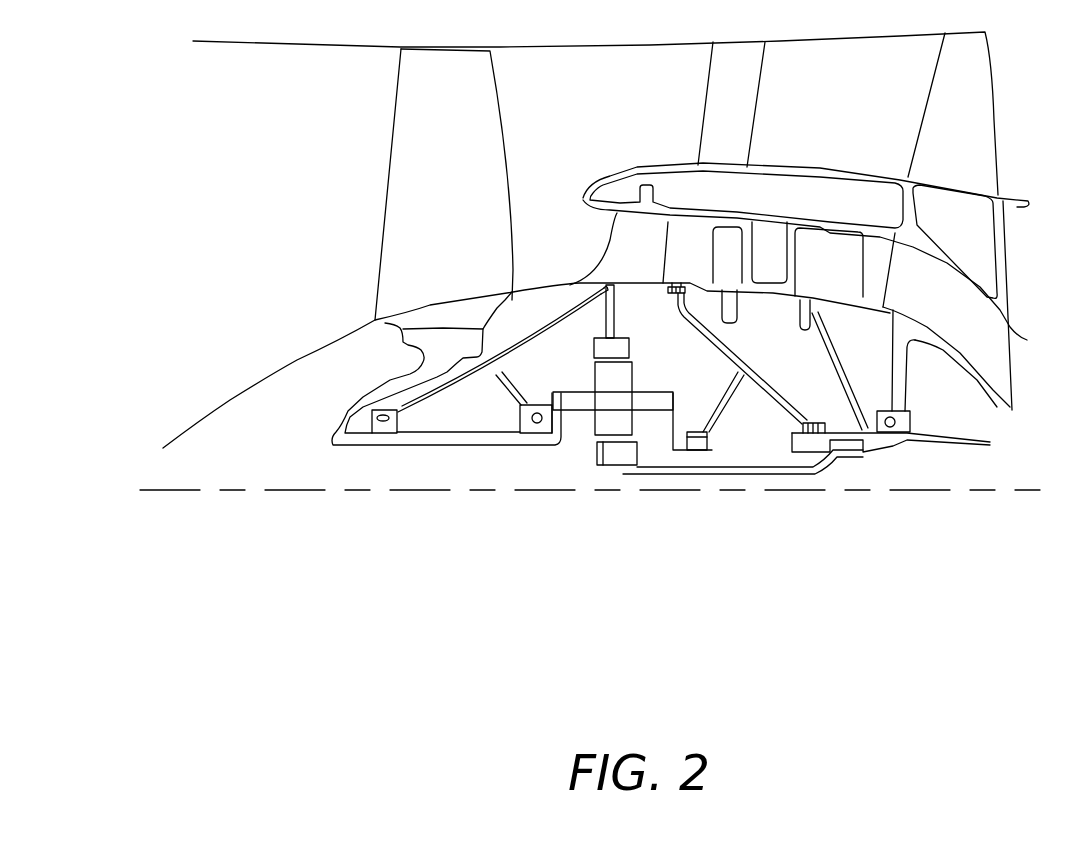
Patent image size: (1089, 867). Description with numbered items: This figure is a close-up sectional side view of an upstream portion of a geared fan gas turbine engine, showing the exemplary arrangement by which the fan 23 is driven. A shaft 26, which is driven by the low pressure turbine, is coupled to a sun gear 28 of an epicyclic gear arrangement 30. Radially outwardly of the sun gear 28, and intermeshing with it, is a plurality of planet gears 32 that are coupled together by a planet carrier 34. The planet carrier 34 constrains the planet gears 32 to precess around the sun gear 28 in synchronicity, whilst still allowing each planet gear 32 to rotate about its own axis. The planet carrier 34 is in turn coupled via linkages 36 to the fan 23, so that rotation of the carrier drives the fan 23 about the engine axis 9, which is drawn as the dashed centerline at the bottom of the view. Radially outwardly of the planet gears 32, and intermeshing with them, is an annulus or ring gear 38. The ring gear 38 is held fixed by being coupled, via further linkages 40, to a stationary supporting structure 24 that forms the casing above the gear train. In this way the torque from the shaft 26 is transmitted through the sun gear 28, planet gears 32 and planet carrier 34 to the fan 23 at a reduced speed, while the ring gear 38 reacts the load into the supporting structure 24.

The engine axis 9 is at (263, 490).
The fan 23 is at (418, 183).
The stationary supporting structure 24 is at (617, 237).
The shaft 26 is at (760, 470).
The sun gear 28 is at (617, 455).
The epicyclic gear arrangement 30 is at (580, 437).
The planet gears 32 is at (602, 425).
The planet carrier 34 is at (672, 420).
The linkages 36 is at (570, 430).
The ring gear 38 is at (618, 349).
The linkages 40 is at (618, 318).